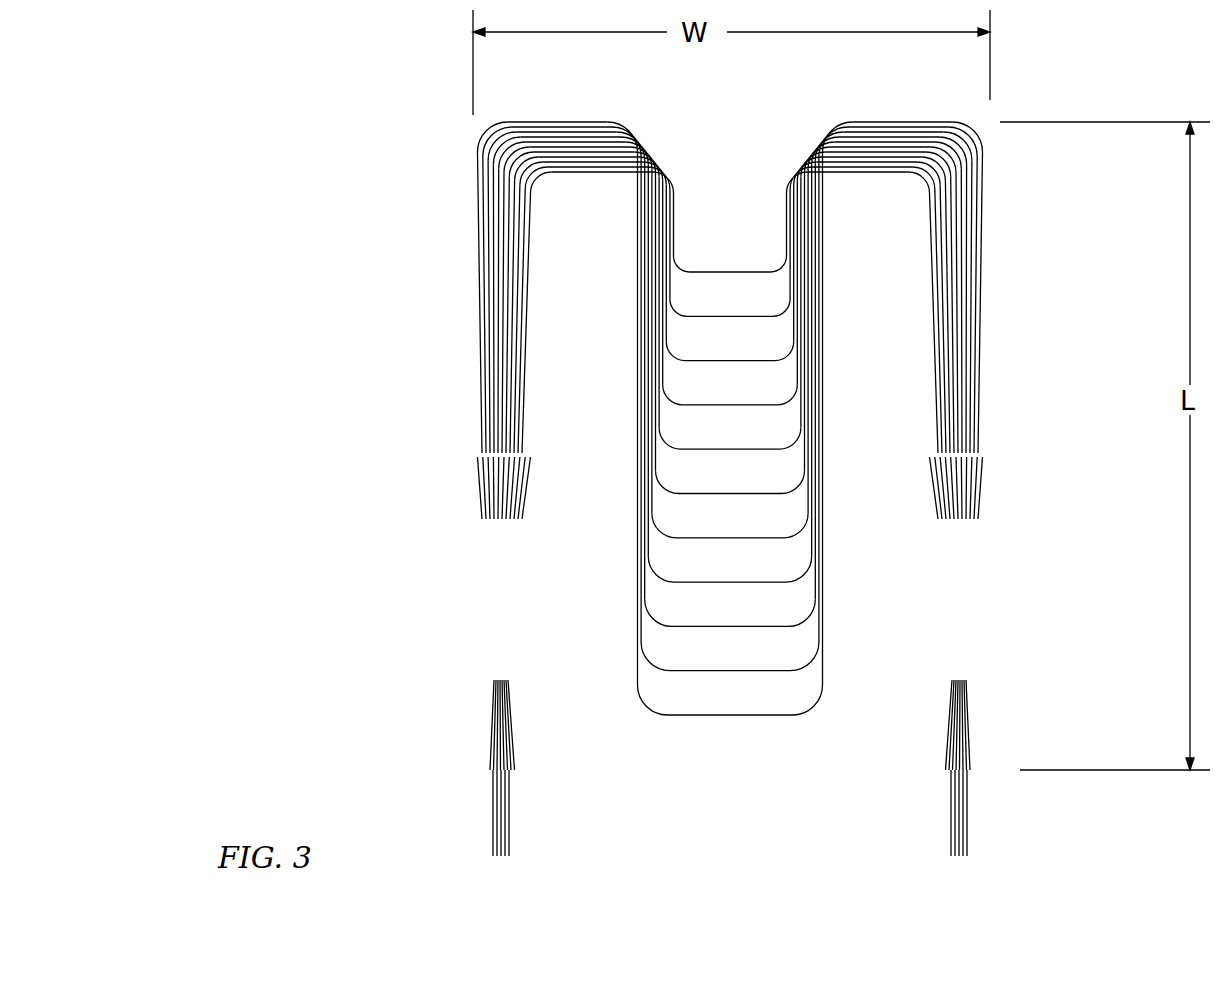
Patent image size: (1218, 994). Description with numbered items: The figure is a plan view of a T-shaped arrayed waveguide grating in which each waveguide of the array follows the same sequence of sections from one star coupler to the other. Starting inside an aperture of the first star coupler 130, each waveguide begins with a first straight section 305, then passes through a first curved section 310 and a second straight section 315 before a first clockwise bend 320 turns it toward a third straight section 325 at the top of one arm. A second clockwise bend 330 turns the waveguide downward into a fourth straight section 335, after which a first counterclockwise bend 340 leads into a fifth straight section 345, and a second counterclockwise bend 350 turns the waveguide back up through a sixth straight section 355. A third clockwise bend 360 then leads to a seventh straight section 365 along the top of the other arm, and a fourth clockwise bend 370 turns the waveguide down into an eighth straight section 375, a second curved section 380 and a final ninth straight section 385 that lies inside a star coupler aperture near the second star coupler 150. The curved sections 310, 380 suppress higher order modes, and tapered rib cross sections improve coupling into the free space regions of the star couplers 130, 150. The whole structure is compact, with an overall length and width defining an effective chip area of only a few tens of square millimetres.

The first star coupler 130 is at (370, 453).
The second star coupler 150 is at (1090, 453).
The first straight section 305 is at (458, 453).
The first curved section 310 is at (450, 263).
The second straight section 315 is at (451, 170).
The first clockwise bend 320 is at (477, 128).
The third straight section 325 is at (655, 105).
The second clockwise bend 330 is at (667, 122).
The fourth straight section 335 is at (630, 190).
The first counterclockwise bend 340 is at (685, 258).
The fifth straight section 345 is at (795, 780).
The second counterclockwise bend 350 is at (777, 257).
The sixth straight section 355 is at (830, 190).
The third clockwise bend 360 is at (790, 124).
The seventh straight section 365 is at (960, 105).
The fourth clockwise bend 370 is at (982, 127).
The eighth straight section 375 is at (1009, 170).
The second curved section 380 is at (1010, 263).
The ninth straight section 385 is at (1002, 453).